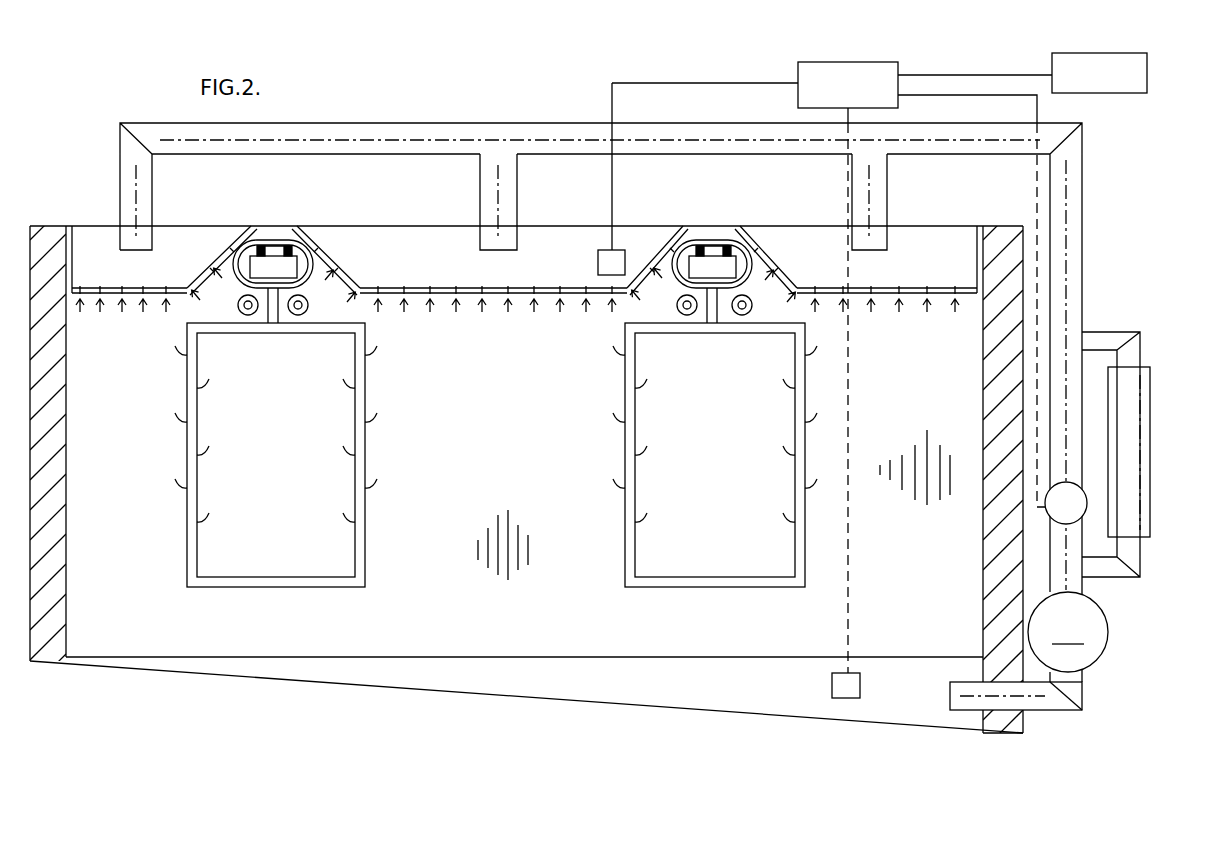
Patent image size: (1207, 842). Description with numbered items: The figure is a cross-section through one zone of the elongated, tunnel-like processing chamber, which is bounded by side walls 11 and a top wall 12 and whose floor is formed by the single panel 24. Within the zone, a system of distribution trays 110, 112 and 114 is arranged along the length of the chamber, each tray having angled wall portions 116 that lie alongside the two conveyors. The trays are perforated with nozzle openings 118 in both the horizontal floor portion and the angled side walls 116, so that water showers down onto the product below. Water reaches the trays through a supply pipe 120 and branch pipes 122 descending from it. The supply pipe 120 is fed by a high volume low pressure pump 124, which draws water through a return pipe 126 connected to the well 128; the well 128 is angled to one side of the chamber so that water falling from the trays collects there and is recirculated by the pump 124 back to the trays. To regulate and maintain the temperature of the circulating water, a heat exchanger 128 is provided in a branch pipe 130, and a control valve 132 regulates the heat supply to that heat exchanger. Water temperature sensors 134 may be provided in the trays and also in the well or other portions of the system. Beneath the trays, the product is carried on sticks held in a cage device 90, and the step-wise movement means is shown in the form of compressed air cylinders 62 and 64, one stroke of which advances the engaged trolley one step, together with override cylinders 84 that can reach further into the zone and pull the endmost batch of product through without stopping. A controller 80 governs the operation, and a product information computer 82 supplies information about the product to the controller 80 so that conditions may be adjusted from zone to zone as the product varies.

The side walls 11 is at (66, 560).
The top wall 12 is at (385, 226).
The floor panel 24 is at (465, 657).
The compressed air cylinder 62 is at (298, 315).
The compressed air cylinder 64 is at (742, 315).
The controller 80 is at (798, 100).
The product information computer 82 is at (1130, 93).
The override cylinders 84 is at (248, 315).
The cage device 90 is at (365, 548).
The distribution tray 110 is at (170, 280).
The distribution tray 112 is at (545, 288).
The distribution tray 114 is at (812, 288).
The angled wall portions 116 is at (235, 240).
The nozzle openings 118 is at (170, 295).
The supply pipe 120 is at (435, 125).
The branch pipes 122 is at (122, 188).
The pump 124 is at (1068, 632).
The return pipe 126 is at (1082, 696).
The well 128 is at (600, 700).
The branch pipe 130 is at (1140, 575).
The control valve 132 is at (1075, 505).
The water temperature sensors 134 is at (612, 260).